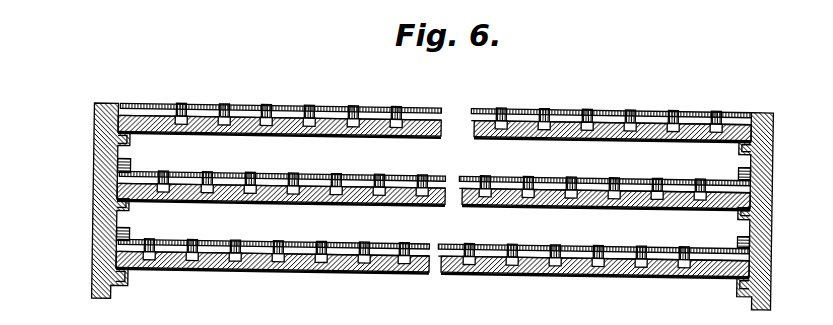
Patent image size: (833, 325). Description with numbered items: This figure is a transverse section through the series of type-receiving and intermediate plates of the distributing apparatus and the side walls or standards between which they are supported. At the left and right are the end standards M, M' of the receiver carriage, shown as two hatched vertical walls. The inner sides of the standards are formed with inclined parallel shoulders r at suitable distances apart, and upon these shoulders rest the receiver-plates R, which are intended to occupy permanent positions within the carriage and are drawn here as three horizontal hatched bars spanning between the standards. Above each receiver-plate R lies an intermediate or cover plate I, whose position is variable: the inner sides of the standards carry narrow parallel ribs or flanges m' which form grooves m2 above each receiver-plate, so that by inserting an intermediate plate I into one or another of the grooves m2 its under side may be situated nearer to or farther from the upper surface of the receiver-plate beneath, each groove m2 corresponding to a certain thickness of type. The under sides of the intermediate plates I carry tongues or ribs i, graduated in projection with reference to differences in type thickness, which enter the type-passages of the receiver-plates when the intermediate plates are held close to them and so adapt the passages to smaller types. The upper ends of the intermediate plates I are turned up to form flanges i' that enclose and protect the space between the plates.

The left side frame / end wall M is at (102, 201).
The end standard M' is at (765, 212).
The receiver-plate R is at (433, 202).
The intermediate plate I is at (397, 113).
The tongue or rib i is at (433, 202).
The flange i' is at (433, 202).
The inclined parallel shoulder r is at (133, 140).
The rib or flange m' is at (424, 229).
The groove m2 is at (131, 166).